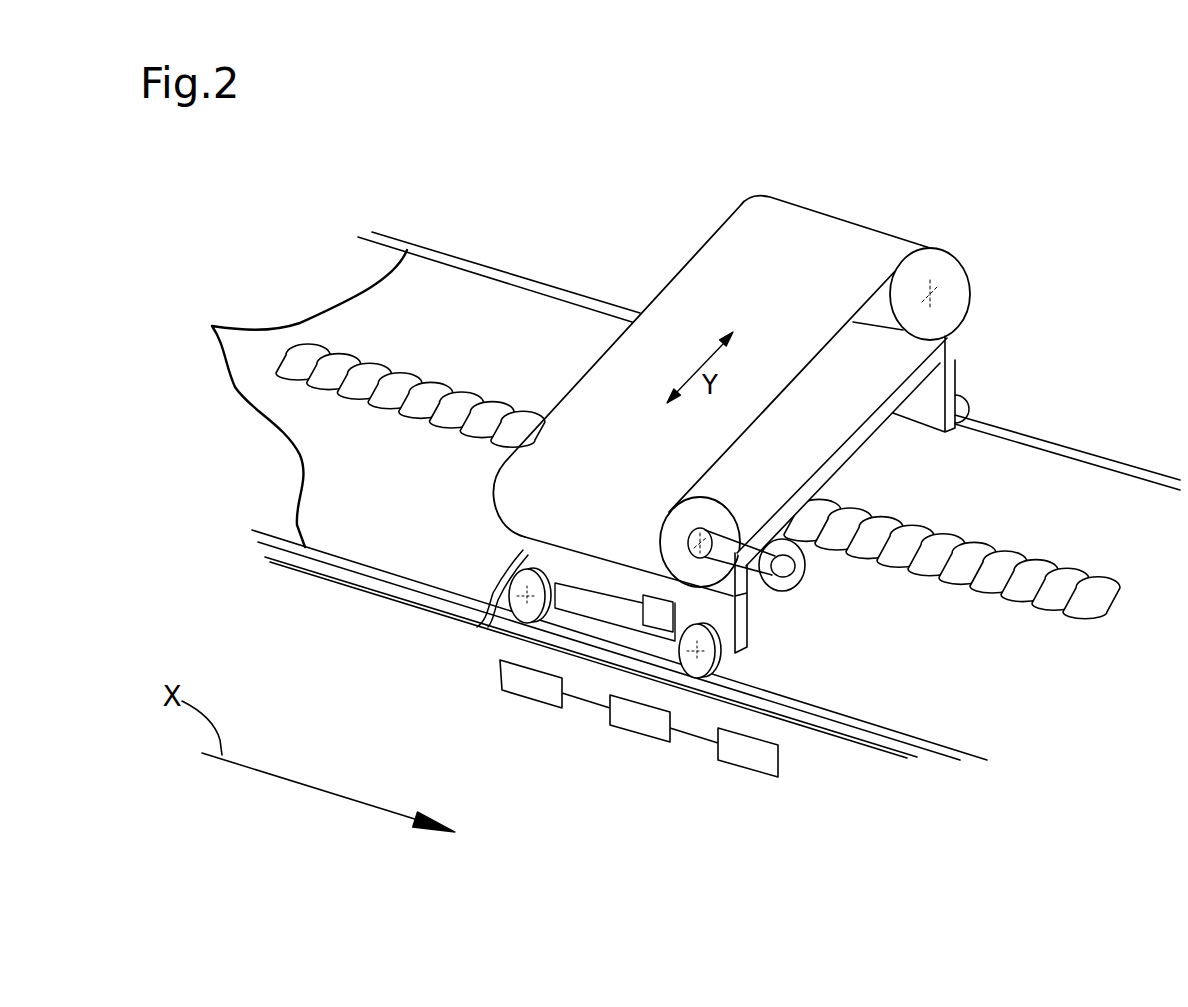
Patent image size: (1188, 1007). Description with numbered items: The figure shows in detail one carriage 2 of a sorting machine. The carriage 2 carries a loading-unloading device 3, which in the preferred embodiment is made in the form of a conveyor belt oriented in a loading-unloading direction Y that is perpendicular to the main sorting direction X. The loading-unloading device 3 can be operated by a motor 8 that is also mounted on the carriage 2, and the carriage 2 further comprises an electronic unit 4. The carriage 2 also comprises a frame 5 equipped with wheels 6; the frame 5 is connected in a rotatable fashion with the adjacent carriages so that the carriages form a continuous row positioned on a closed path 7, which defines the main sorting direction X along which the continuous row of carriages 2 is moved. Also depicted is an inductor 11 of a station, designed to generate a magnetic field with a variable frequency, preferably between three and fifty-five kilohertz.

The carriage 2 is at (731, 459).
The loading-unloading device 3 is at (812, 237).
The electronic unit 4 is at (603, 600).
The frame 5 is at (947, 354).
The wheels 6 is at (523, 610).
The closed path 7 is at (676, 496).
The motor 8 is at (781, 584).
The inductor 11 is at (640, 720).